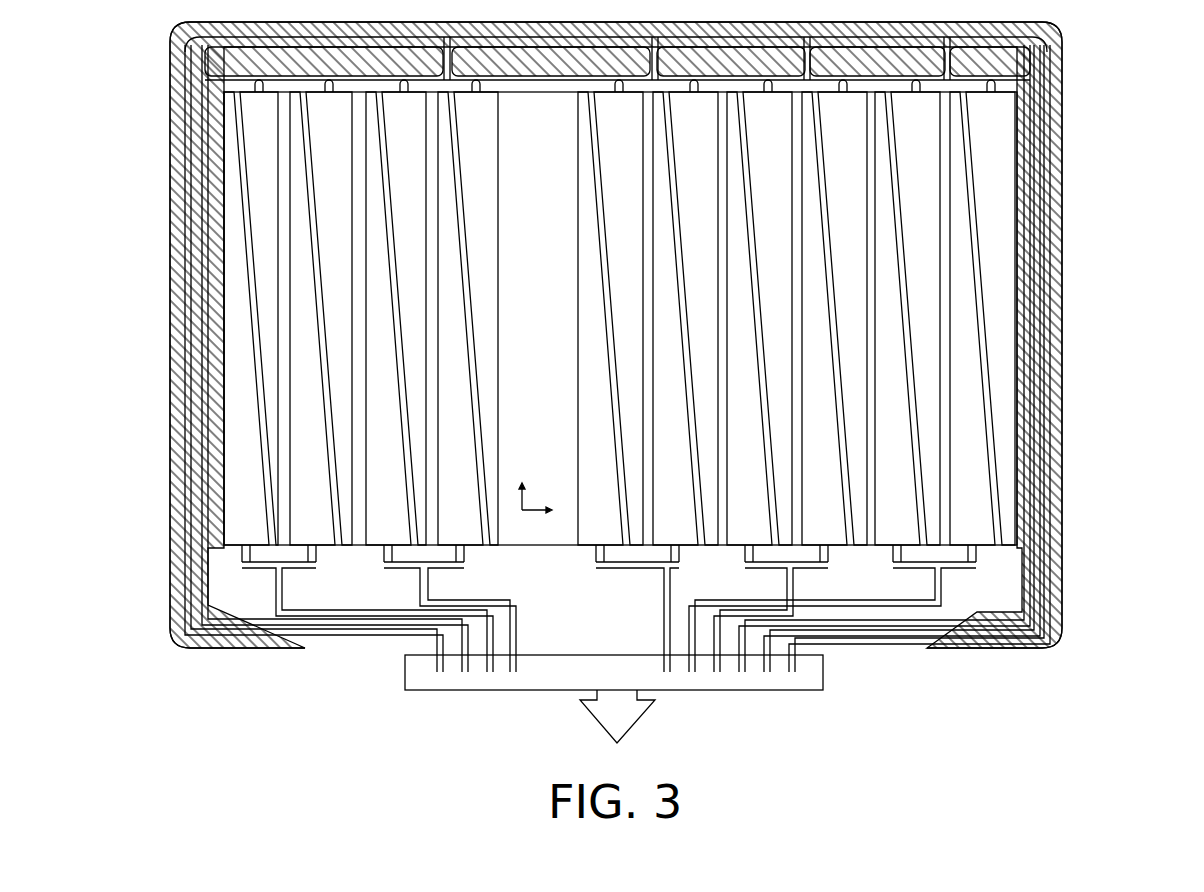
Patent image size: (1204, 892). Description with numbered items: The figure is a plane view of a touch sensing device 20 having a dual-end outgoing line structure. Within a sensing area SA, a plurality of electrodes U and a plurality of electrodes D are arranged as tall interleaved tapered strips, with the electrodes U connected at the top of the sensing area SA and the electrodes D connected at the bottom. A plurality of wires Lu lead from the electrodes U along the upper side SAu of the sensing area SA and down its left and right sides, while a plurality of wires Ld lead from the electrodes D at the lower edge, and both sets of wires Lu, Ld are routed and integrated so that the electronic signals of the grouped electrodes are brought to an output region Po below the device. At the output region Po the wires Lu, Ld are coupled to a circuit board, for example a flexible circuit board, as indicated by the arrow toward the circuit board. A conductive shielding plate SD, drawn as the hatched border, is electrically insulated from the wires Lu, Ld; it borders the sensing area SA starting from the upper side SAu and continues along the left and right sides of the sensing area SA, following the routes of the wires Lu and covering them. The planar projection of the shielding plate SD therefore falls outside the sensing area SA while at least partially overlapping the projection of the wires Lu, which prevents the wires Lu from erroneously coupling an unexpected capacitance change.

The touch sensing device 20 is at (1100, 80).
The upper side of the sensing area SAu is at (1000, 87).
The sensing area SA is at (556, 547).
The conductive shielding plate SD is at (1010, 650).
The wires Lu is at (450, 43).
The wires Ld is at (282, 588).
The electrodes U is at (486, 116).
The electrodes D is at (471, 534).
The output region Po is at (830, 663).